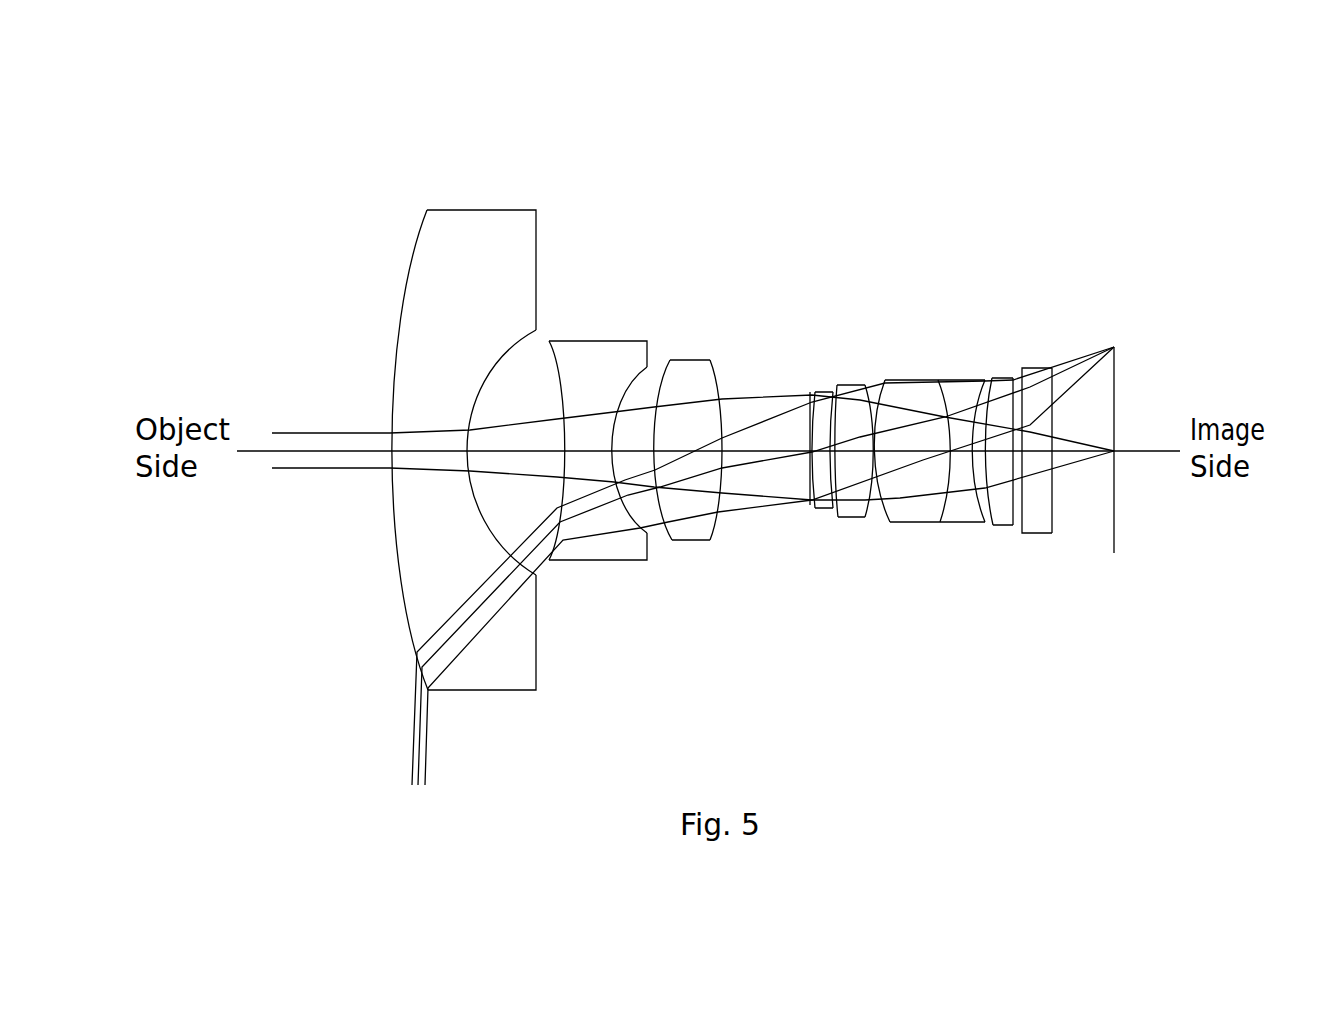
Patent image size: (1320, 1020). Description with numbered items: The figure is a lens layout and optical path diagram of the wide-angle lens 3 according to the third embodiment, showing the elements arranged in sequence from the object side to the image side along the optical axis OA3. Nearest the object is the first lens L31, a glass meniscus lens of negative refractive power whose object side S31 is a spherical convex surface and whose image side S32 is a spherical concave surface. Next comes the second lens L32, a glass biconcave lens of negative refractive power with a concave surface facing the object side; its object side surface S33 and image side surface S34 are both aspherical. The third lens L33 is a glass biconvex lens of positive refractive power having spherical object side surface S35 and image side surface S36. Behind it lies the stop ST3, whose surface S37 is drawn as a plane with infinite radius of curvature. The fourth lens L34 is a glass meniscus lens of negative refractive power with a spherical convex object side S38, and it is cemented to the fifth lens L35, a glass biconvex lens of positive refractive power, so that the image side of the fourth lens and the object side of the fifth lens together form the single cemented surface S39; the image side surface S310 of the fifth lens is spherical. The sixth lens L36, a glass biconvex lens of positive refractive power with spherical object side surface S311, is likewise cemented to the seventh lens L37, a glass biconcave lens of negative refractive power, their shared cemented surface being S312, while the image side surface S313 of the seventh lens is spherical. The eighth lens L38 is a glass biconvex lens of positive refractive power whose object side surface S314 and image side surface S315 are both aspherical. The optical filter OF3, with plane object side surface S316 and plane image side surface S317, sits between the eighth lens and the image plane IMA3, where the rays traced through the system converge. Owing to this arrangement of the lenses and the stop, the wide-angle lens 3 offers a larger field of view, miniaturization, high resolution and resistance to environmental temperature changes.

The wide-angle lens 3 is at (270, 103).
The first lens L31 is at (417, 406).
The second lens L32 is at (596, 401).
The third lens L33 is at (685, 406).
The stop ST3 is at (791, 417).
The fourth lens L34 is at (838, 411).
The fifth lens L35 is at (896, 410).
The sixth lens L36 is at (953, 411).
The seventh lens L37 is at (999, 381).
The eighth lens L38 is at (1062, 401).
The optical filter OF3 is at (1126, 367).
The image plane IMA3 is at (1114, 347).
The optical axis OA3 is at (268, 452).
The object side surface of the first lens S31 is at (400, 583).
The image side surface of the first lens S32 is at (480, 518).
The object side surface of the second lens S33 is at (560, 548).
The image side surface of the second lens S34 is at (584, 560).
The object side surface of the third lens S35 is at (672, 540).
The image side surface of the third lens S36 is at (708, 540).
The stop surface S37 is at (808, 510).
The object side surface of the fourth lens S38 is at (820, 510).
The cemented surface of the fourth and fifth lenses S39 is at (828, 510).
The image side surface of the fifth lens S310 is at (870, 518).
The object side surface of the sixth lens S311 is at (888, 522).
The cemented surface of the sixth and seventh lenses S312 is at (920, 522).
The image side surface of the seventh lens S313 is at (960, 522).
The object side surface of the eighth lens S314 is at (1000, 522).
The image side surface of the eighth lens S315 is at (1008, 527).
The object side surface of the optical filter S316 is at (1014, 527).
The image side surface of the optical filter S317 is at (1052, 513).